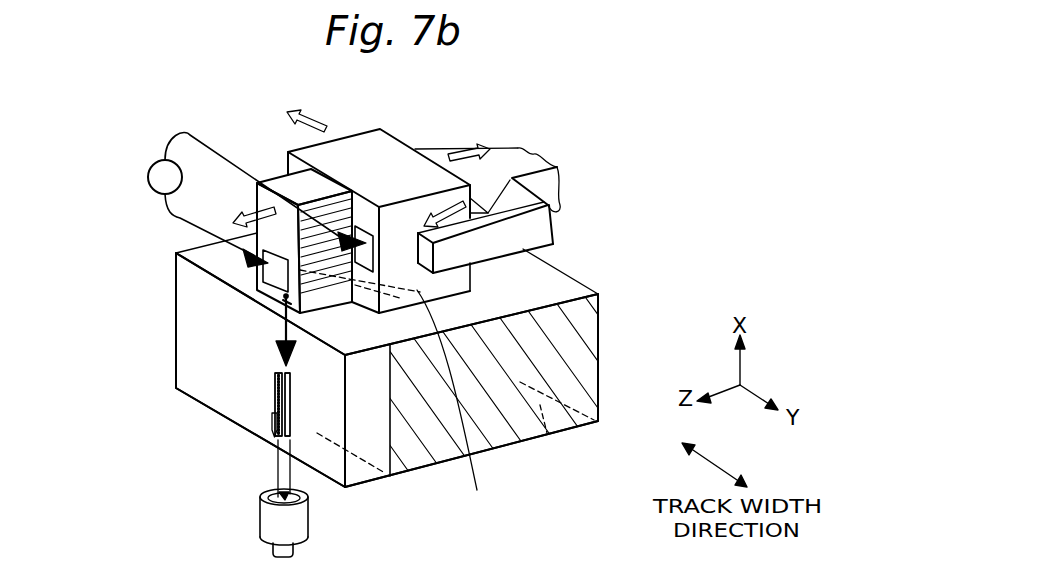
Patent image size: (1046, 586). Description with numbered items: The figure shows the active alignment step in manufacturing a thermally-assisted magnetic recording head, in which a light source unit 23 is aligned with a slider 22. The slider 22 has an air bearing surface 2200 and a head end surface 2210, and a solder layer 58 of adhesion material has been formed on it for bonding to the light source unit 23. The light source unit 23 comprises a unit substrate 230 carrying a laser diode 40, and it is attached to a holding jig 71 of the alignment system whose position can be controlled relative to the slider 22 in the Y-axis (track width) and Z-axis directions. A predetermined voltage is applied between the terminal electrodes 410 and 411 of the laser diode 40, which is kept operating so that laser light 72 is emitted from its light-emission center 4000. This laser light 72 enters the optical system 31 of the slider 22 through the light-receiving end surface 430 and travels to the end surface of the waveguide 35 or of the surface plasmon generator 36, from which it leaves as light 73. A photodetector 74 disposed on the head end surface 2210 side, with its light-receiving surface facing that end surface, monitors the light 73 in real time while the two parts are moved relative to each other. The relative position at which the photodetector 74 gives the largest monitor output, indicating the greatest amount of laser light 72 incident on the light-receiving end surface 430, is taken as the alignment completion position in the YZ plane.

The slider 22 is at (595, 282).
The head end surface 2210 is at (324, 455).
The air bearing surface 2200 is at (546, 434).
The solder layer 58 is at (456, 405).
The light source unit 23 is at (393, 127).
The unit substrate 230 is at (394, 157).
The holding jig 71 is at (528, 150).
The laser diode 40 is at (292, 182).
The terminal electrode 410 is at (366, 225).
The terminal electrode 411 is at (272, 263).
The light-emission center 4000 is at (283, 289).
The light-receiving end surface 430 is at (285, 307).
The laser light 72 is at (288, 325).
The optical system 31 is at (126, 401).
The waveguide 35 is at (274, 395).
The surface plasmon generator 36 is at (272, 425).
The light 73 is at (278, 480).
The photodetector 74 is at (268, 522).